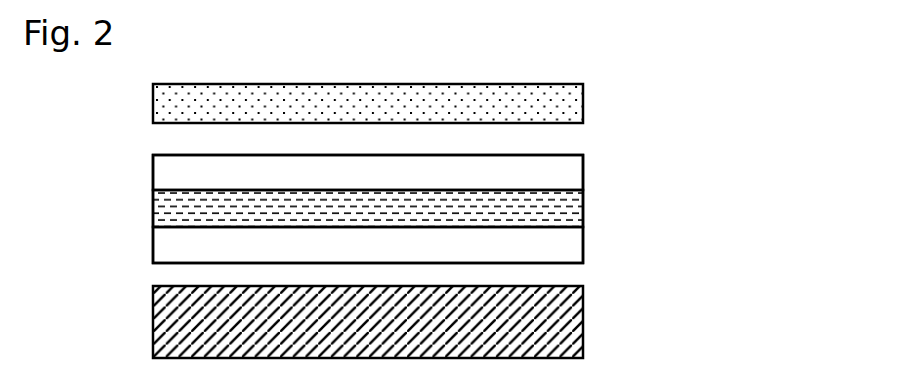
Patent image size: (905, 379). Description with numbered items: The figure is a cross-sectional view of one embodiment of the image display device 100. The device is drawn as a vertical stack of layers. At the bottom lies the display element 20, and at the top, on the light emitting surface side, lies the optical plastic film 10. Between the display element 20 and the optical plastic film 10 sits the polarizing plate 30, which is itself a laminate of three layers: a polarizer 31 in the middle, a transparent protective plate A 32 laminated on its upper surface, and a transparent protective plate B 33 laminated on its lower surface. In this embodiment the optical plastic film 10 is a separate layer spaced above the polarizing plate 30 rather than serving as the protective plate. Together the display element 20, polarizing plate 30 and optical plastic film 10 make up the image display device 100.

The optical plastic film 10 is at (553, 104).
The display element 20 is at (555, 322).
The polarizing plate 30 is at (446, 209).
The polarizer 31 is at (568, 205).
The transparent protective plate A 32 is at (568, 172).
The transparent protective plate B 33 is at (568, 243).
The image display device 100 is at (743, 102).